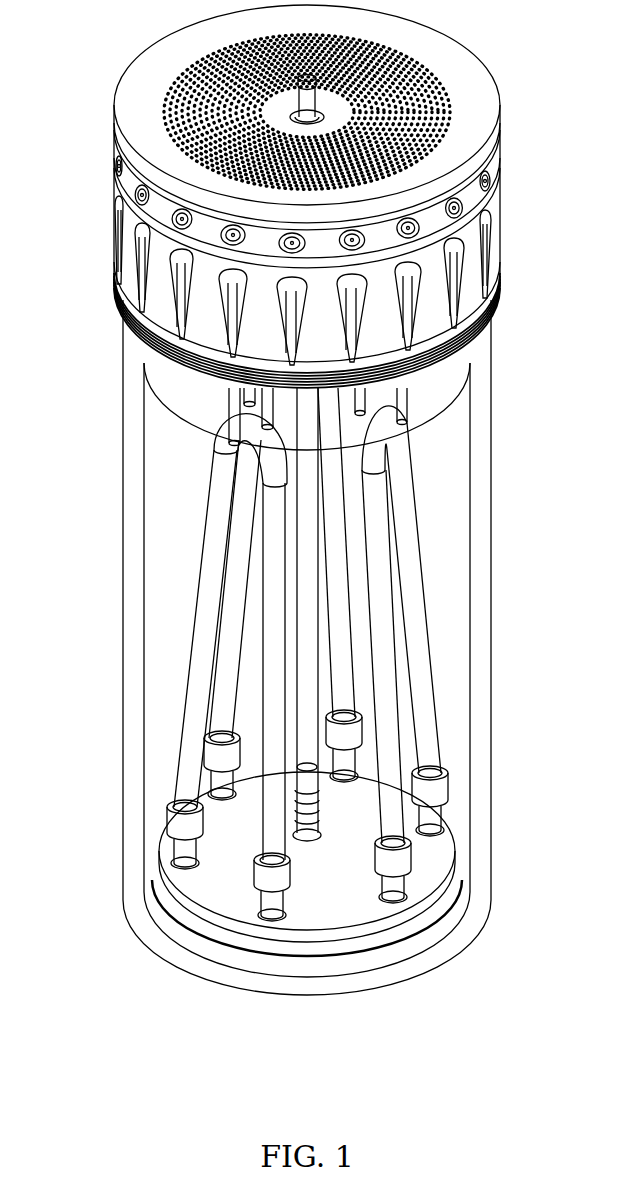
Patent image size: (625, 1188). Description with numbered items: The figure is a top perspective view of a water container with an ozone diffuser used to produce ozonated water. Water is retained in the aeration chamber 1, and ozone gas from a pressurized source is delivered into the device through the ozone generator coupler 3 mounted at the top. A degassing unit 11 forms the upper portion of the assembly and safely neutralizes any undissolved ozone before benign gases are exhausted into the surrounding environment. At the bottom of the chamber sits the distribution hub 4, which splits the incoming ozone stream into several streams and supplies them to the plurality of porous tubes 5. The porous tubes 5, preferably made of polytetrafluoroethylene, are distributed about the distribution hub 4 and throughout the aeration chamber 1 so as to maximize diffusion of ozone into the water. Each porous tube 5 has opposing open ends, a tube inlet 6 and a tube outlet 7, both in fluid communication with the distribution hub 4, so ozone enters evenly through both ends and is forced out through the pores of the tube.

The aeration chamber 1 is at (112, 302).
The degassing unit 11 is at (487, 98).
The ozone generator coupler 3 is at (314, 86).
The distribution hub 4 is at (338, 884).
The porous tubes 5 is at (205, 572).
The tube inlet 6 is at (186, 804).
The tube outlet 7 is at (269, 856).